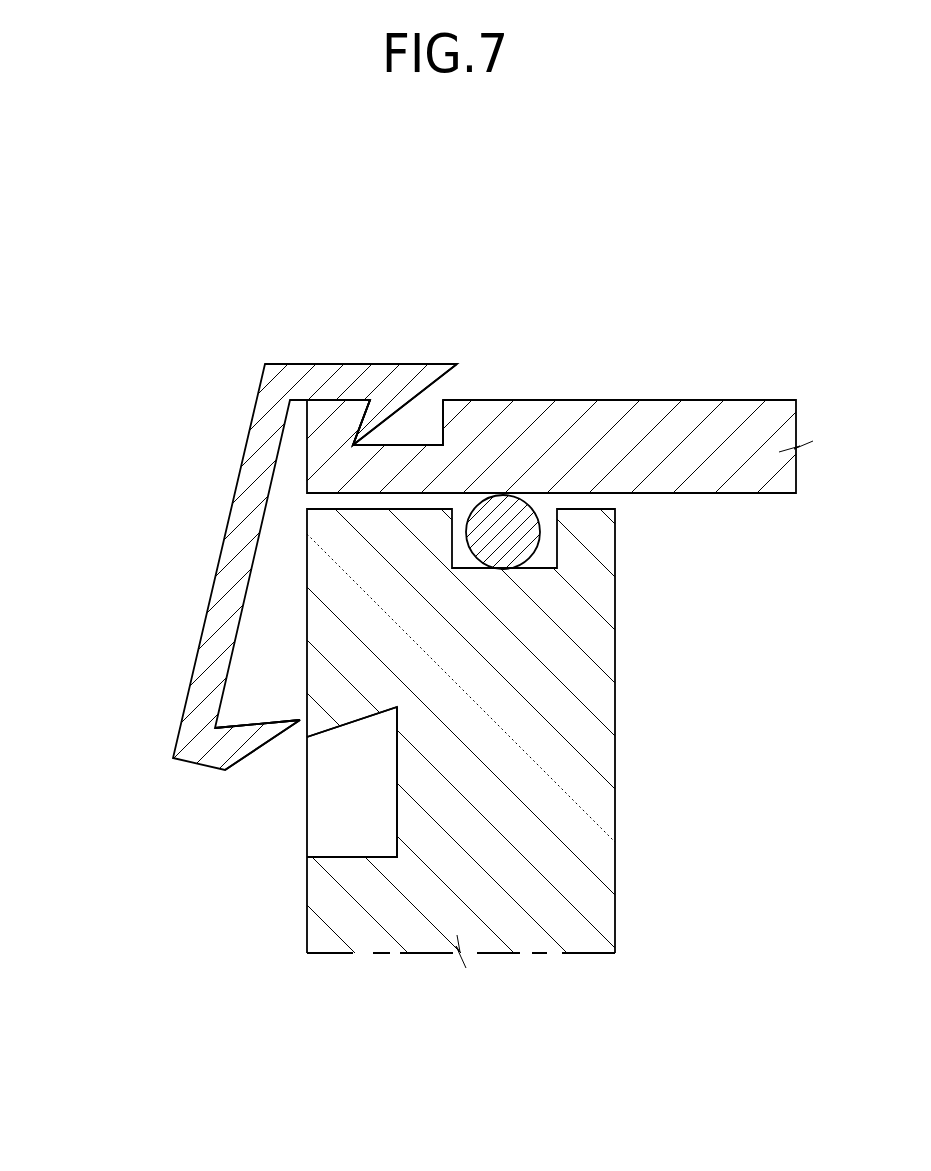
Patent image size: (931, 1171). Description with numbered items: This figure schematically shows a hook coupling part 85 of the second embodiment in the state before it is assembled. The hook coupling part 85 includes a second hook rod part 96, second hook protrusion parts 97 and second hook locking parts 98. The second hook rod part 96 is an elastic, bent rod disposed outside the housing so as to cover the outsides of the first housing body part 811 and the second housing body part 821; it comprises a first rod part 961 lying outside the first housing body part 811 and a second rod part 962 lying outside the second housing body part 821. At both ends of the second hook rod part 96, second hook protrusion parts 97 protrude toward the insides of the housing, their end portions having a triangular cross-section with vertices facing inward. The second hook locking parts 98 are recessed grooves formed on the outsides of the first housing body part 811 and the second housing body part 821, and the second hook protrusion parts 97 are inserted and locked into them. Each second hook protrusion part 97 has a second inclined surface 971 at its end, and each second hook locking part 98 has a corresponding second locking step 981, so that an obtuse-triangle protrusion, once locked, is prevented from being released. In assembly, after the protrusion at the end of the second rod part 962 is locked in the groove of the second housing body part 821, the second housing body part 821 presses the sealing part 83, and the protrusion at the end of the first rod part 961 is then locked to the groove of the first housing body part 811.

The hook coupling part 85 is at (157, 559).
The second hook rod part 96 is at (157, 284).
The first rod part 961 is at (233, 497).
The second rod part 962 is at (280, 363).
The second hook protrusion part 97 is at (442, 390).
The second inclined surface 971 is at (245, 723).
The second hook locking part 98 is at (470, 399).
The second locking step 981 is at (353, 722).
The second housing body part 821 is at (707, 413).
The first housing body part 811 is at (307, 893).
The sealing part 83 is at (513, 538).